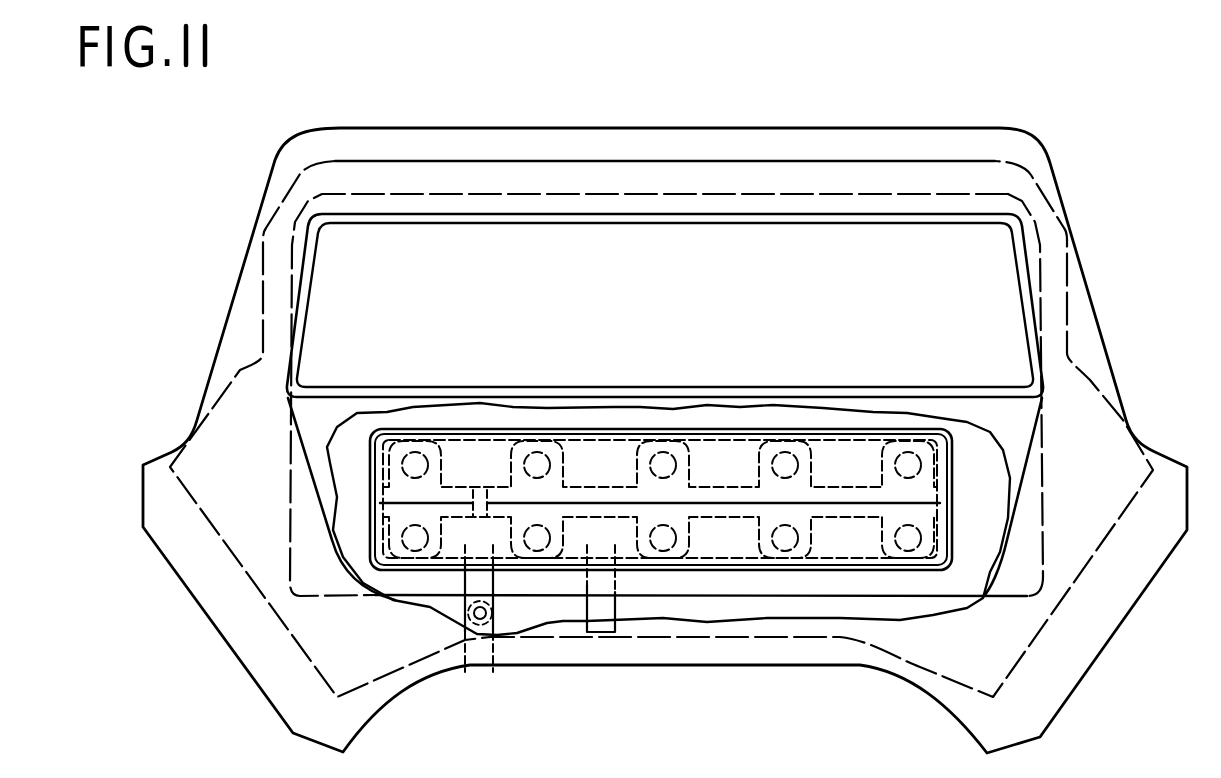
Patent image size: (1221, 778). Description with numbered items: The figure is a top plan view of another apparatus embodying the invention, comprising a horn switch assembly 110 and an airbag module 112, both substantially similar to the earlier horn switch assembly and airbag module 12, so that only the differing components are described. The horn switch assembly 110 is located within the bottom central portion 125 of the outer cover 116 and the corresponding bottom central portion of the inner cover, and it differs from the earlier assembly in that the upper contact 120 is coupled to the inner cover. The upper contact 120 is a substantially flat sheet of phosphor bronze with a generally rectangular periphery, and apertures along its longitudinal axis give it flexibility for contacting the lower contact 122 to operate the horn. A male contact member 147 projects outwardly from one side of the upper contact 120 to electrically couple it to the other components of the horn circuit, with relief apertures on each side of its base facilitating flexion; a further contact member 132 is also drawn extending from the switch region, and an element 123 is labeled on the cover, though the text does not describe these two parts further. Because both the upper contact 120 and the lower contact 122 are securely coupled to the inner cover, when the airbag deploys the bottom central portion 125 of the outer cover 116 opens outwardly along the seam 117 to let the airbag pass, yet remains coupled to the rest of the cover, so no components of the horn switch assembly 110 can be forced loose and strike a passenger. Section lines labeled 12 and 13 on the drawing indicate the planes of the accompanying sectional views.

The horn switch assembly 110 is at (489, 368).
The airbag module 112 is at (359, 116).
The outer cover 116 is at (271, 182).
The seam 117 is at (304, 298).
The upper contact 120 is at (823, 457).
The lower contact 122 is at (763, 547).
The lens 123 is at (733, 254).
The bottom central portion of the outer cover 125 is at (654, 406).
The wire lead connector 132 is at (595, 634).
The male contact member 147 is at (494, 658).
The airbag module 12 is at (663, 92).
The section line 13- 13 is at (612, 503).